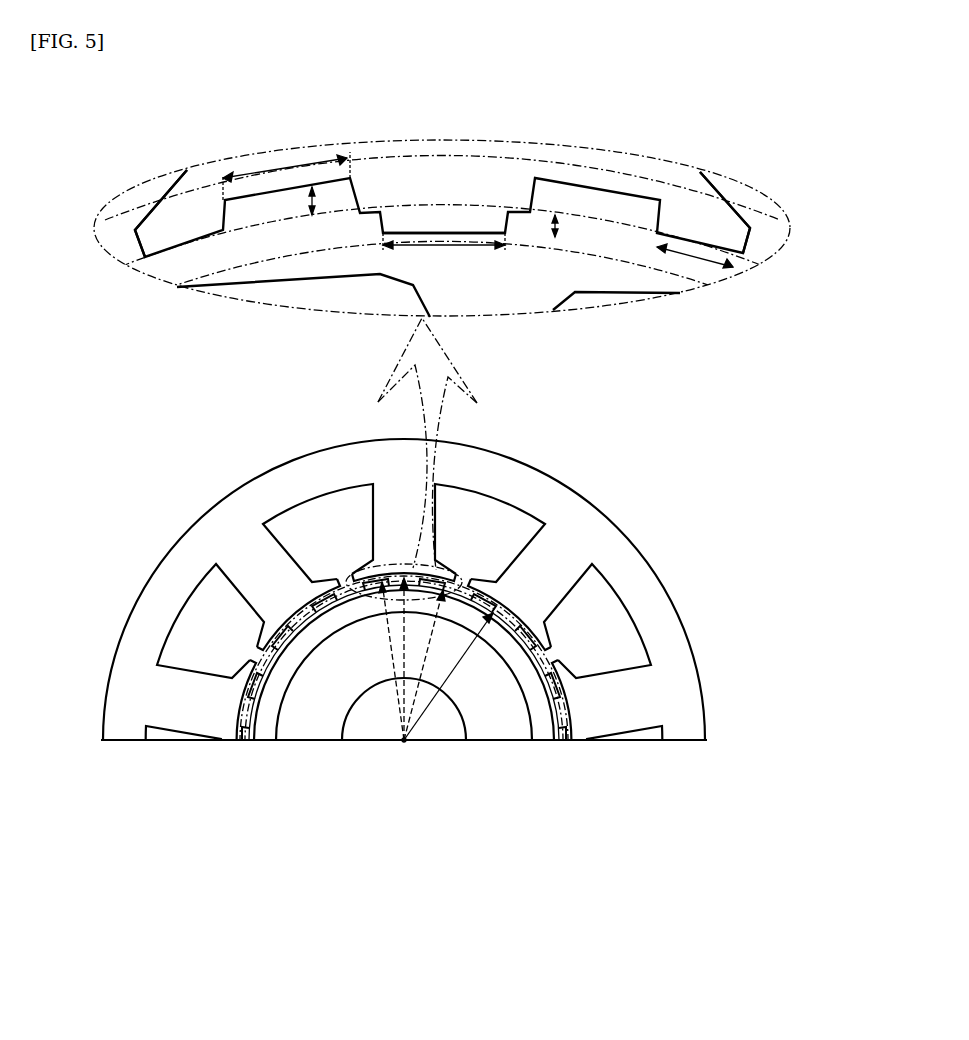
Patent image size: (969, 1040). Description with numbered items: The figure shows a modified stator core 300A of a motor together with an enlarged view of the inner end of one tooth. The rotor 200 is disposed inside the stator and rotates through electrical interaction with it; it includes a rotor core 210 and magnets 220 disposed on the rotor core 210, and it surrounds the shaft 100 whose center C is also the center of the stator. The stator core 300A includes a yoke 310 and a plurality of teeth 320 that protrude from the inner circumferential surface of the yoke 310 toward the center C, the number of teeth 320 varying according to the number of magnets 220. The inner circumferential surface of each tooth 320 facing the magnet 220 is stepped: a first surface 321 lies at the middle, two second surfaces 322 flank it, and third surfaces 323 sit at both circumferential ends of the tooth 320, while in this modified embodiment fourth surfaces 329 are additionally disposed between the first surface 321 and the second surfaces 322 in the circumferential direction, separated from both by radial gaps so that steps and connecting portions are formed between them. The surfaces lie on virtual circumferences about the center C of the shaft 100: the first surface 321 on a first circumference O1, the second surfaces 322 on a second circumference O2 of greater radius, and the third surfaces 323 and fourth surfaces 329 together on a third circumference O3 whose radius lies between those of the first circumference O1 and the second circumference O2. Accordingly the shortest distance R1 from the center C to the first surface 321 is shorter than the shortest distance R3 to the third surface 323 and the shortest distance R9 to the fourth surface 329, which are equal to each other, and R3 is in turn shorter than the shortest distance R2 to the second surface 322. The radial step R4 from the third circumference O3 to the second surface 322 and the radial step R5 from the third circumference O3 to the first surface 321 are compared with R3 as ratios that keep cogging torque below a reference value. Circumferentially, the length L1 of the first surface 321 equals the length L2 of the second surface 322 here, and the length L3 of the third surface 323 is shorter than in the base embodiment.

The shaft 100 is at (378, 722).
The rotor 200 is at (560, 845).
The rotor core 210 is at (483, 717).
The magnets 220 is at (543, 717).
The stator core 300A is at (598, 395).
The yoke 310 is at (510, 482).
The tooth 320 is at (553, 577).
The first surface 321 is at (467, 234).
The second surface 322 is at (237, 190).
The third surface 323 is at (190, 240).
The fourth surface 329 is at (367, 223).
The center C is at (404, 742).
The length of the first surface L1 is at (457, 223).
The length of the second surface L2 is at (307, 158).
The length of the third surface L3 is at (700, 250).
The shortest distance to the first surface R1 is at (395, 632).
The shortest distance to the second surface R2 is at (400, 668).
The shortest distance to the third surface R3 is at (430, 645).
The shortest distance from the third surface to the second surface R4 is at (313, 197).
The shortest distance from the third surface to the first surface R5 is at (557, 223).
The shortest distance to the fourth surface R9 is at (450, 672).
The first circumference O1 is at (270, 250).
The second circumference O2 is at (168, 218).
The third circumference O3 is at (133, 257).